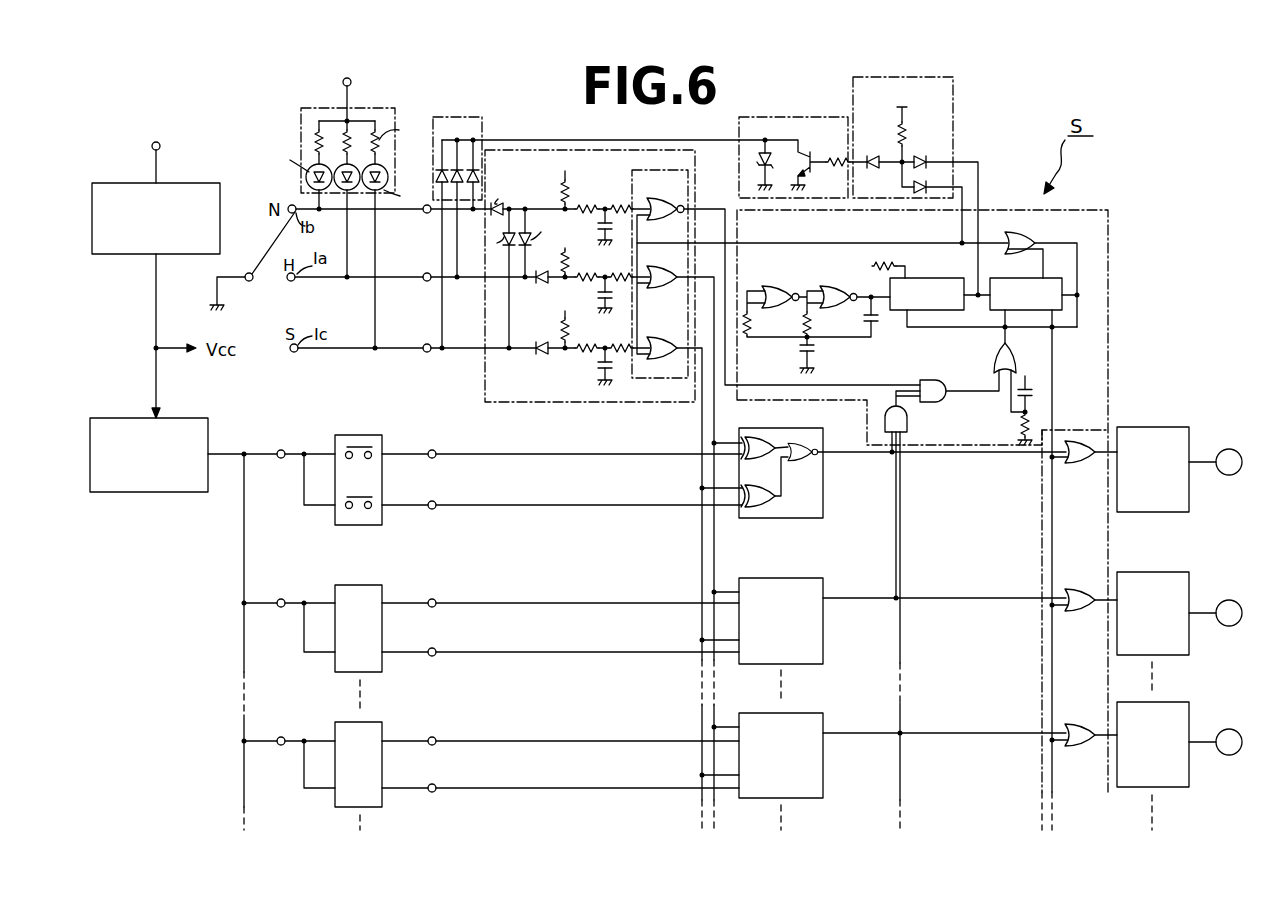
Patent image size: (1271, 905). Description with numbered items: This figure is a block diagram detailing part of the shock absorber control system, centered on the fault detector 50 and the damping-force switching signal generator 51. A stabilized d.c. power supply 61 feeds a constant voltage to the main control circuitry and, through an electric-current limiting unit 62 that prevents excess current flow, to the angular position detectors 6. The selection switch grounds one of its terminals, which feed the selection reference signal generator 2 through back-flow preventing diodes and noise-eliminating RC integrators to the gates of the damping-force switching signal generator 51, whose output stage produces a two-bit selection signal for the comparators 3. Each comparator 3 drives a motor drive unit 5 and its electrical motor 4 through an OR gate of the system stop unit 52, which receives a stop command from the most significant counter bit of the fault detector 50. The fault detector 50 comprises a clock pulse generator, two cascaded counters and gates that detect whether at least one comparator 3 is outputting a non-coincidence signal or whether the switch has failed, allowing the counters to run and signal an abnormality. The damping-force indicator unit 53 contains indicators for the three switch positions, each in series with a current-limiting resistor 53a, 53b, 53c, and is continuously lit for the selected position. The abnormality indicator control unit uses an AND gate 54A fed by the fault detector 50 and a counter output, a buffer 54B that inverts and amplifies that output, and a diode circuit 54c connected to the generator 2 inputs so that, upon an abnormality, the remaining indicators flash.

The stabilized d.c. power supply 61 is at (92, 192).
The electric-current limiting unit 62 is at (90, 423).
The damping-force indicator unit 53 is at (339, 203).
The current-limiting resistor 53a is at (351, 163).
The current-limiting resistor 53b is at (316, 140).
The current-limiting resistor 53c is at (386, 181).
The diode circuit 54c is at (464, 117).
The buffer 54B is at (790, 117).
The AND gate 54A is at (953, 118).
The selection reference signal generator 2 is at (517, 150).
The damping-force switching signal generator 51 is at (632, 170).
The fault detector 50 is at (1110, 252).
The system stop unit 52 is at (1042, 517).
The angular position detector 6 is at (382, 440).
The comparator 3 is at (823, 505).
The motor drive unit 5 is at (1178, 427).
The electrical motor 4 is at (1229, 449).